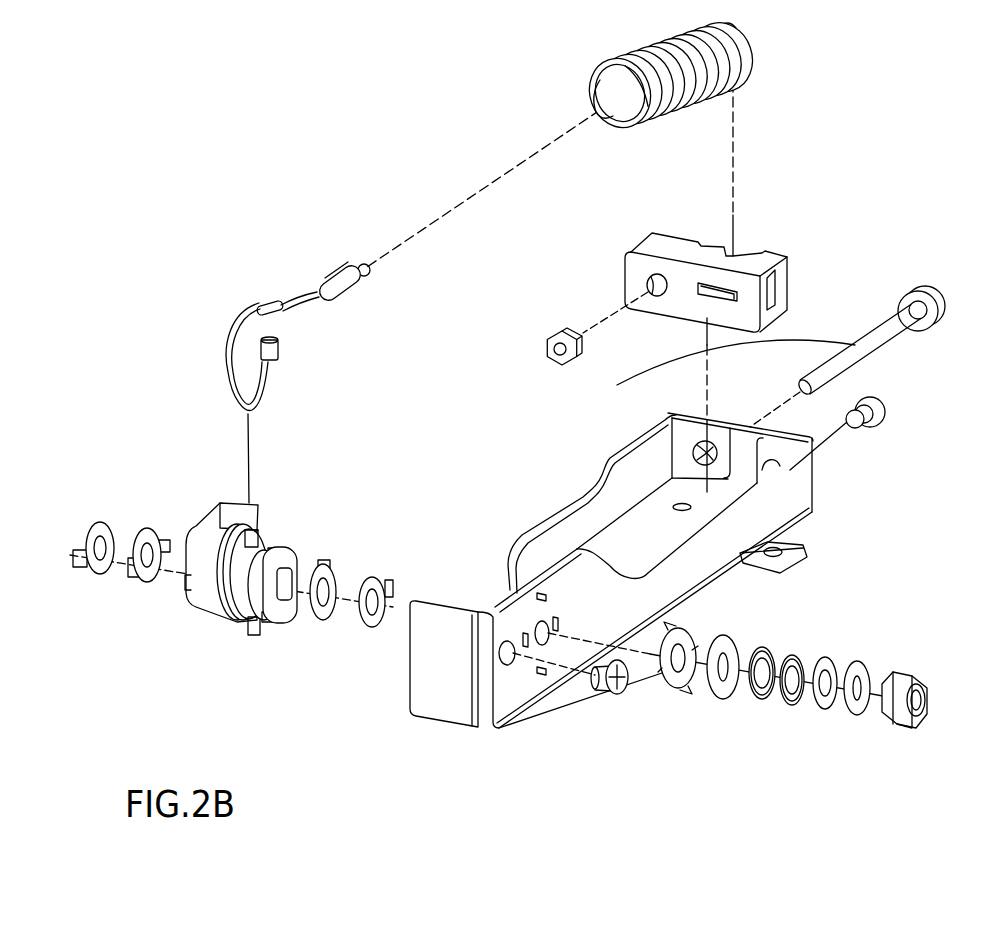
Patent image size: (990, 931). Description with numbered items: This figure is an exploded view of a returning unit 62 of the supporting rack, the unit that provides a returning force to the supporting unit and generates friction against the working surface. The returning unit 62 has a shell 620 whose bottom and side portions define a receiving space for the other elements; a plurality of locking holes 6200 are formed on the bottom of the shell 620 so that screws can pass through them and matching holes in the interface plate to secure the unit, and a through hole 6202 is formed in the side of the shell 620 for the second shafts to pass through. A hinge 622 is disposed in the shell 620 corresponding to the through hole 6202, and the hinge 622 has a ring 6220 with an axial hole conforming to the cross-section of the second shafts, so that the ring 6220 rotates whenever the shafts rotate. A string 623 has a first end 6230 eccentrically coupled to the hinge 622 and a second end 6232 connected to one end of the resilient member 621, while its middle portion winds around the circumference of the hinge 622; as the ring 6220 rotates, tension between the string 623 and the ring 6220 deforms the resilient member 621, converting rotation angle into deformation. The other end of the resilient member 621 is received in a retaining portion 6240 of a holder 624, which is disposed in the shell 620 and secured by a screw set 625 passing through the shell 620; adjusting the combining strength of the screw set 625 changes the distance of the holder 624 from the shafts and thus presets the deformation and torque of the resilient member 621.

The returning unit 62 is at (174, 196).
The resilient member 621 is at (600, 80).
The holder 624 is at (770, 262).
The retaining portion 6240 is at (712, 288).
The screw set 625 is at (578, 347).
The shell 620 is at (800, 485).
The locking holes 6200 is at (682, 509).
The through hole 6202 is at (543, 637).
The string 623 is at (433, 362).
The second end 6232 is at (370, 272).
The first end 6230 is at (278, 347).
The hinge 622 is at (380, 660).
The ring 6220 is at (210, 550).